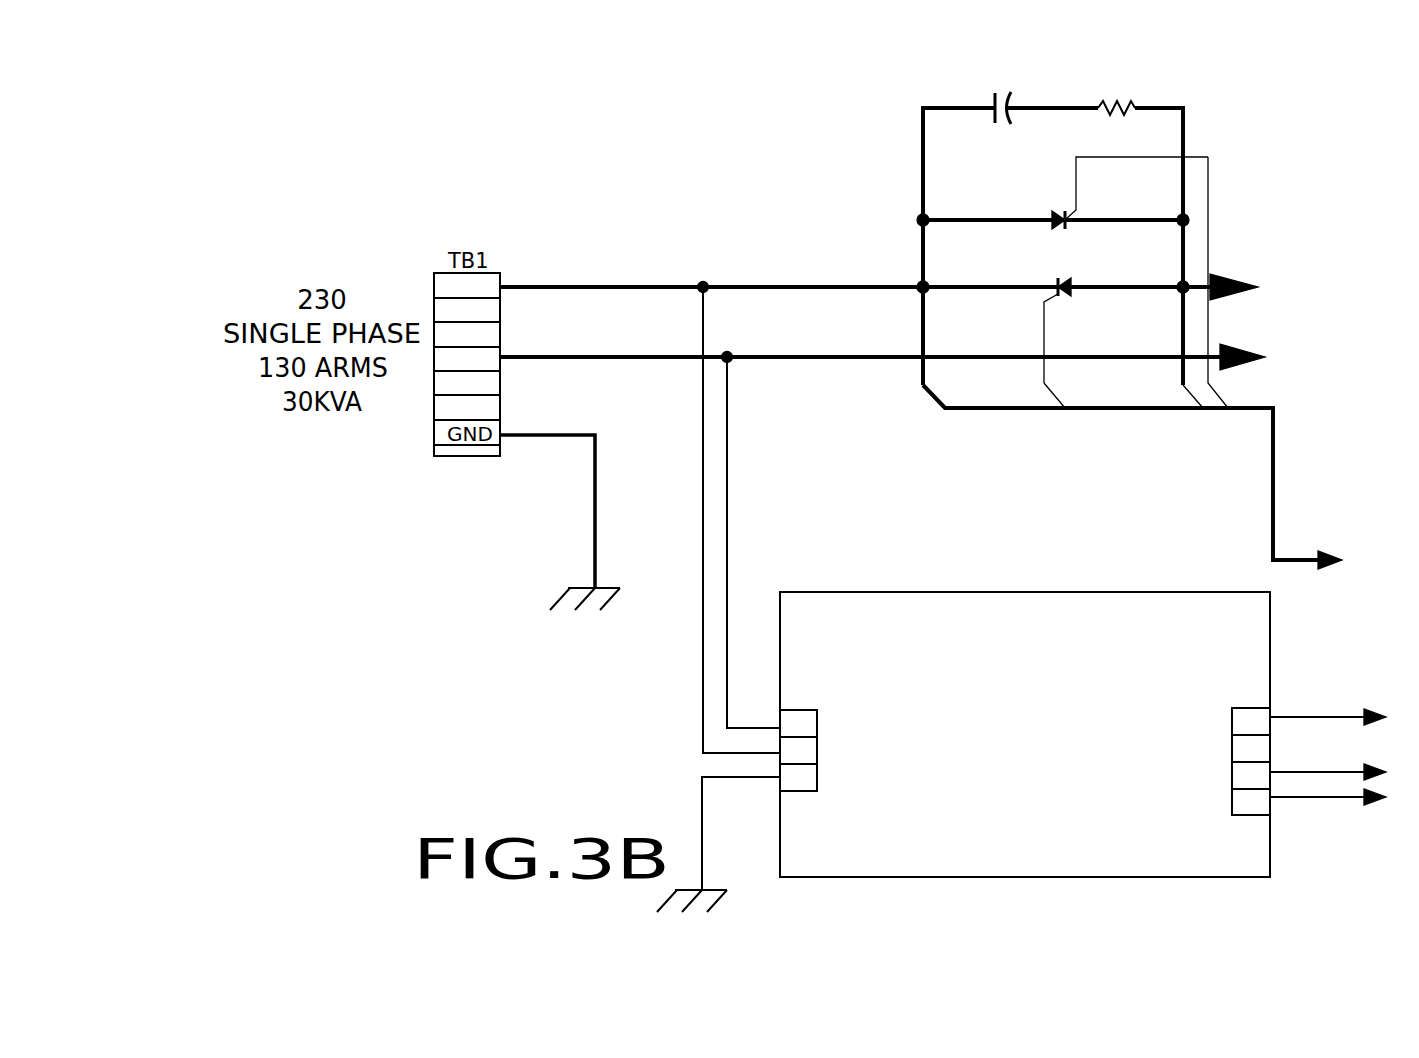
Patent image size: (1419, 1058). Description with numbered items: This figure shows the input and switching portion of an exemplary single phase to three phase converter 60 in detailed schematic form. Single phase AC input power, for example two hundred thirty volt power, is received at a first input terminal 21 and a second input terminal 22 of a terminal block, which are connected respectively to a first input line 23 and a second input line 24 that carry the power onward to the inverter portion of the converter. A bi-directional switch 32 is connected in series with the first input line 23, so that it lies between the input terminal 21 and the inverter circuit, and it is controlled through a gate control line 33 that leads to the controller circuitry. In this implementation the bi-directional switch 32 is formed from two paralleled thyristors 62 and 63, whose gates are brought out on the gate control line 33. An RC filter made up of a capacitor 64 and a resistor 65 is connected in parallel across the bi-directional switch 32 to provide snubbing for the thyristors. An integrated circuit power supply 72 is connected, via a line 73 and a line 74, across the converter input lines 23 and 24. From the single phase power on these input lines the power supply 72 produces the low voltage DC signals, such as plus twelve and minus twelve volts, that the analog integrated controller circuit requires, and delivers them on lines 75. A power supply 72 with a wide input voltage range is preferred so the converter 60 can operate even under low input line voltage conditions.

The first input terminal 21 is at (502, 285).
The second input terminal 22 is at (500, 371).
The first input line 23 is at (830, 285).
The second input line 24 is at (782, 360).
The bi-directional switch 32 is at (922, 255).
The gate control line 33 is at (1103, 410).
The single phase to three phase converter 60 is at (1107, 218).
The thyristor 62 is at (1068, 218).
The thyristor 63 is at (1068, 294).
The capacitor 64 is at (1009, 100).
The resistor 65 is at (1133, 108).
The integrated circuit power supply 72 is at (1010, 877).
The line 73 is at (702, 667).
The line 74 is at (728, 572).
The lines 75 is at (1350, 713).